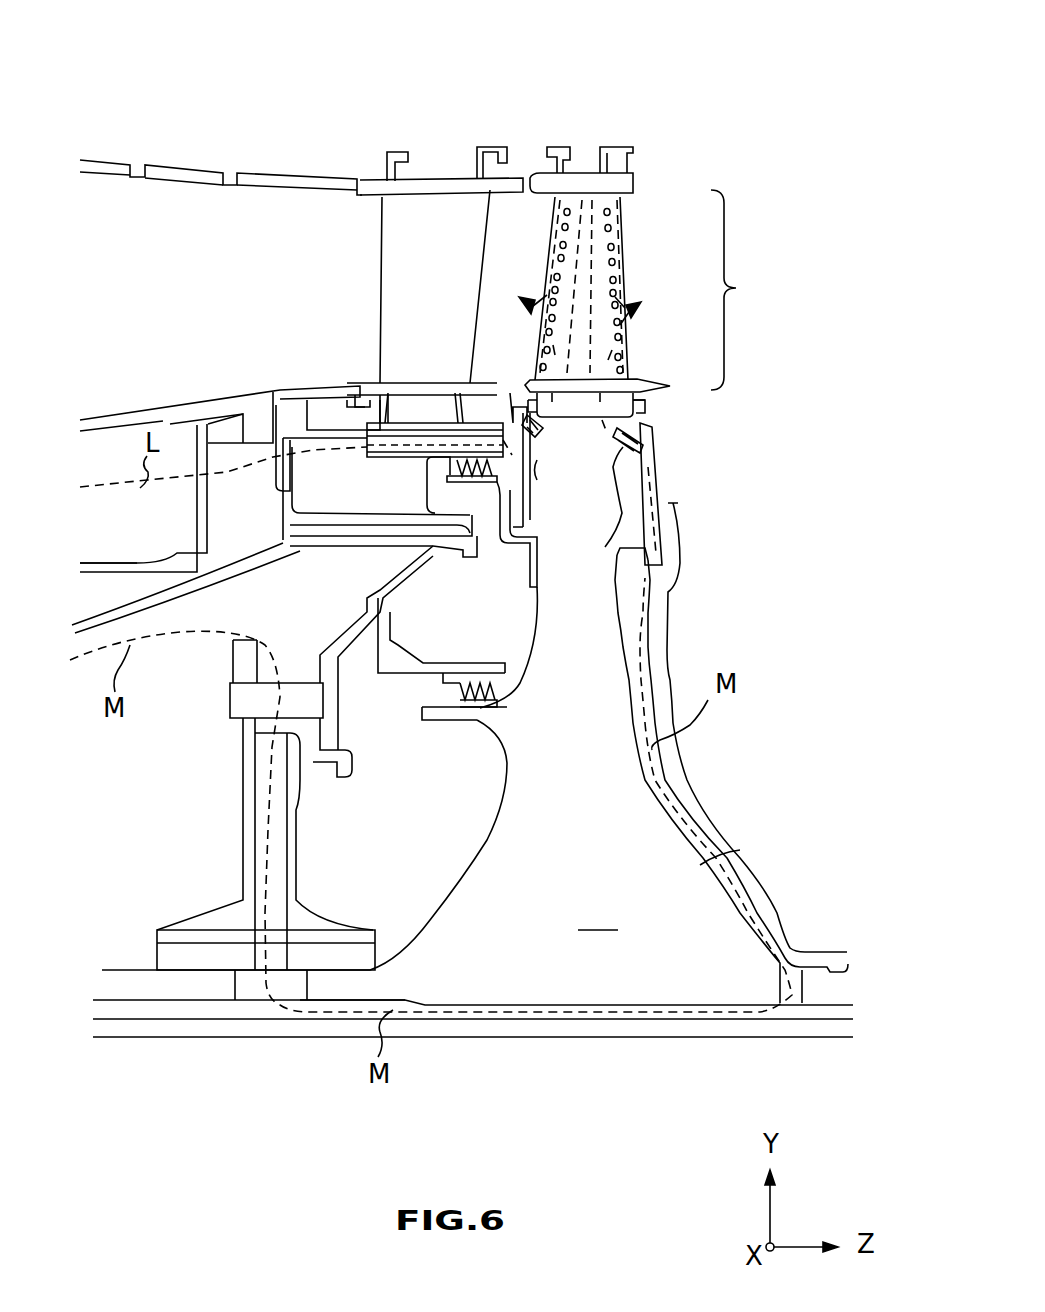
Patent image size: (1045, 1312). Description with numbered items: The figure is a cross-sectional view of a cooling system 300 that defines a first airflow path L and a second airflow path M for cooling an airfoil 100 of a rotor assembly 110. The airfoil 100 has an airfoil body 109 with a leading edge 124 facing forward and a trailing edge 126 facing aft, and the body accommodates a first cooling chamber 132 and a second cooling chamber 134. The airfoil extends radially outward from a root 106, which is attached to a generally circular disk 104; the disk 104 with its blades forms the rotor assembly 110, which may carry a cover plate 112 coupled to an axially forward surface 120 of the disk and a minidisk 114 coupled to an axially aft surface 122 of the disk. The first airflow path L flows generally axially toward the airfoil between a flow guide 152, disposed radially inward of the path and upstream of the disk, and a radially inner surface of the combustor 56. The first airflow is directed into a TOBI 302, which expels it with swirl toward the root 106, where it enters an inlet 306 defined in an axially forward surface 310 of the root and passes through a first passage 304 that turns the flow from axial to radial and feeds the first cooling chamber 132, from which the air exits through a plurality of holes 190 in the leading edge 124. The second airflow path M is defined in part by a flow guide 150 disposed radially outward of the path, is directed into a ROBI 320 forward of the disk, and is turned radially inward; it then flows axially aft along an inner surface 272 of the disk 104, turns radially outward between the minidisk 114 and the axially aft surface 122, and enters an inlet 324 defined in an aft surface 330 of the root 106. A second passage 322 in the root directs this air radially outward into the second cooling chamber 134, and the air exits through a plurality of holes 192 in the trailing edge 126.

The cooling system 300 is at (737, 90).
The airfoil 100 is at (641, 203).
The airfoil body 109 is at (747, 290).
The leading edge 124 is at (552, 247).
The trailing edge 126 is at (620, 258).
The first cooling chamber 132 is at (553, 295).
The second cooling chamber 134 is at (618, 297).
The holes 190 is at (545, 350).
The holes 192 is at (628, 358).
The inlet 306 is at (500, 425).
The combustor 56 is at (113, 418).
The flow guide 150 is at (83, 625).
The flow guide 152 is at (135, 563).
The TOBI 302 is at (398, 457).
The first passage 304 is at (535, 422).
The axially forward surface 310 is at (537, 468).
The second passage 322 is at (612, 511).
The root 106 is at (645, 400).
The inlet 324 is at (652, 443).
The aft surface 330 is at (655, 495).
The cover plate 112 is at (503, 538).
The minidisk 114 is at (688, 786).
The axially aft surface 122 is at (740, 850).
The axially forward surface 120 is at (492, 833).
The ROBI 320 is at (260, 873).
The disk 104 is at (598, 914).
The inner surface 272 is at (493, 1005).
The rotor assembly 110 is at (783, 1095).